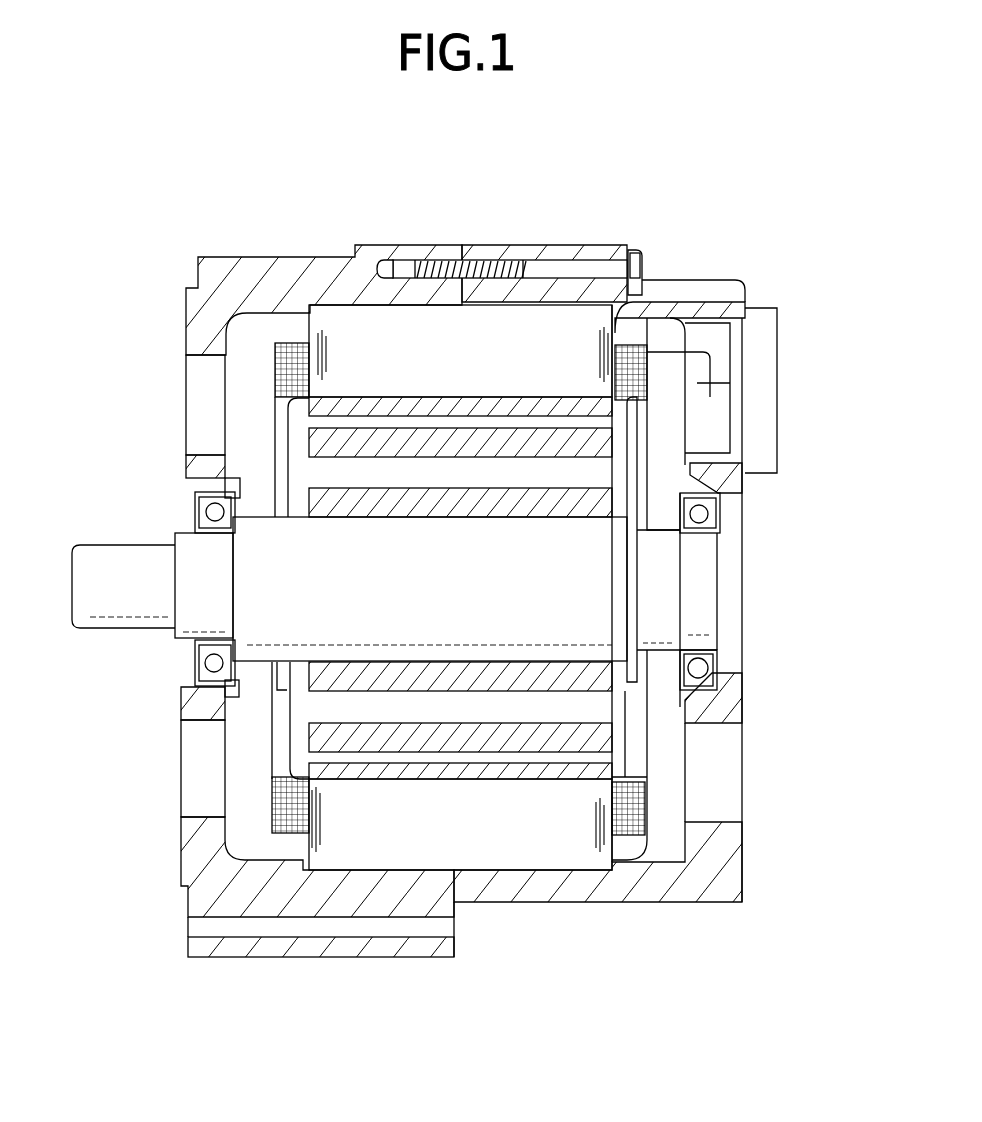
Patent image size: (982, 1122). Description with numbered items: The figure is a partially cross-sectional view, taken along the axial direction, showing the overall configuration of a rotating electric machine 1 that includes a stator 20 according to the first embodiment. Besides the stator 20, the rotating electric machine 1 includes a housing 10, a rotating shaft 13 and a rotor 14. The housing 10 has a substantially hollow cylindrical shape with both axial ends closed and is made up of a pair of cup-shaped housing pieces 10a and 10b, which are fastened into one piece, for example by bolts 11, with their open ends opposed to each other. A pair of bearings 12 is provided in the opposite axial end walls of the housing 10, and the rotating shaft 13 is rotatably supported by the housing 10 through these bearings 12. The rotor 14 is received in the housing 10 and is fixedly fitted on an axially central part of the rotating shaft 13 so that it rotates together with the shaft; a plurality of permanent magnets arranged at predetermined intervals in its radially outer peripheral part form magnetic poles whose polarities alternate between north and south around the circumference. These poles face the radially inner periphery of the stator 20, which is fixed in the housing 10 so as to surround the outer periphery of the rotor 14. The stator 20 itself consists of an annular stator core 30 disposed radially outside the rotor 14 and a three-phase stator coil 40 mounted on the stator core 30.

The rotating electric machine 1 is at (720, 222).
The housing 10 is at (540, 205).
The housing piece 10a is at (368, 256).
The housing piece 10b is at (480, 252).
The bolt 11 is at (607, 262).
The bearing 12 is at (196, 494).
The rotating shaft 13 is at (128, 608).
The rotor 14 is at (598, 444).
The stator 20 is at (623, 980).
The stator core 30 is at (527, 827).
The three-phase stator coil 40 is at (627, 783).